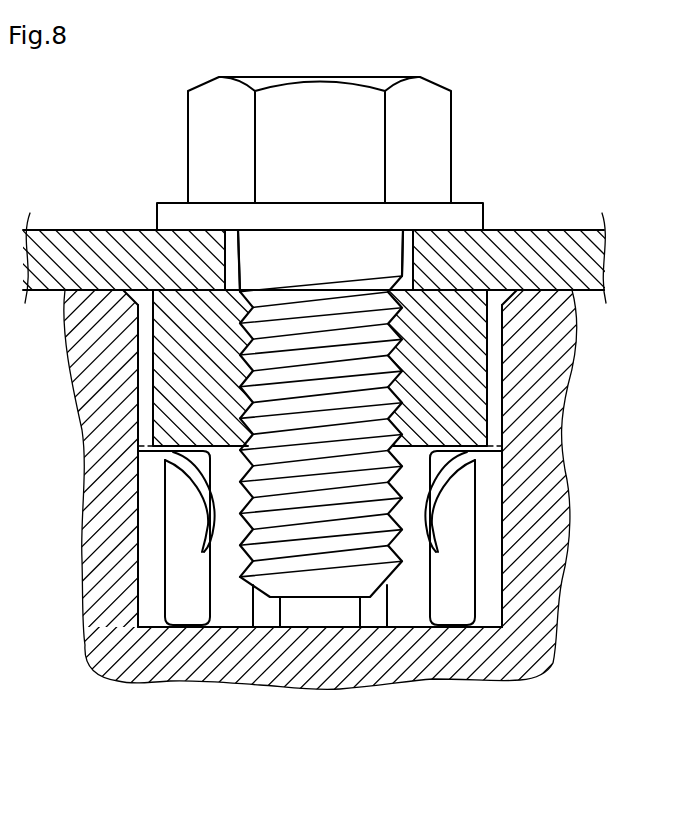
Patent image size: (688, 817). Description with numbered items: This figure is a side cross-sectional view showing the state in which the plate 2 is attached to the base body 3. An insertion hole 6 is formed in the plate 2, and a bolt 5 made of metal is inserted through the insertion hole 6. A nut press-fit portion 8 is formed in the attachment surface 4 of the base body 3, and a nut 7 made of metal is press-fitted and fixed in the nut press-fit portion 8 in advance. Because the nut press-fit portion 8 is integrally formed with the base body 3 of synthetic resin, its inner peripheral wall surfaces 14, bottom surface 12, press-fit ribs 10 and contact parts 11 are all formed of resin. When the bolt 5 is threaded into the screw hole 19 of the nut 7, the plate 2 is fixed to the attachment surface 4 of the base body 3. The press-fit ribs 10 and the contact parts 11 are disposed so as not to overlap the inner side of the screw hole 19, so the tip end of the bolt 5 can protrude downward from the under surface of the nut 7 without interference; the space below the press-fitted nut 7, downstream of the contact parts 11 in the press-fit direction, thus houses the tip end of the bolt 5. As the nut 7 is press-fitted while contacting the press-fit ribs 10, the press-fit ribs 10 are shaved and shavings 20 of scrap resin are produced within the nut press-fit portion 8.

The plate 2 is at (78, 230).
The base body 3 is at (115, 672).
The attachment surface 4 is at (577, 291).
The bolt 5 is at (443, 138).
The insertion hole 6 is at (225, 263).
The nut 7 is at (167, 397).
The nut press-fit portion 8 is at (410, 616).
The press-fit ribs 10 is at (148, 553).
The contact parts 11 is at (183, 433).
The bottom surface 12 is at (327, 620).
The inner peripheral wall surfaces 14 is at (140, 493).
The screw hole 19 is at (252, 408).
The shavings 20 is at (215, 525).